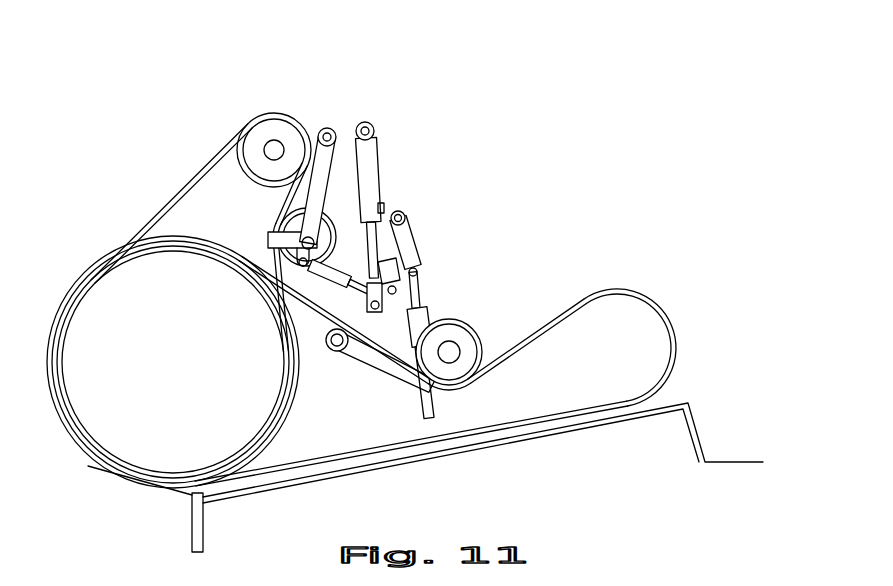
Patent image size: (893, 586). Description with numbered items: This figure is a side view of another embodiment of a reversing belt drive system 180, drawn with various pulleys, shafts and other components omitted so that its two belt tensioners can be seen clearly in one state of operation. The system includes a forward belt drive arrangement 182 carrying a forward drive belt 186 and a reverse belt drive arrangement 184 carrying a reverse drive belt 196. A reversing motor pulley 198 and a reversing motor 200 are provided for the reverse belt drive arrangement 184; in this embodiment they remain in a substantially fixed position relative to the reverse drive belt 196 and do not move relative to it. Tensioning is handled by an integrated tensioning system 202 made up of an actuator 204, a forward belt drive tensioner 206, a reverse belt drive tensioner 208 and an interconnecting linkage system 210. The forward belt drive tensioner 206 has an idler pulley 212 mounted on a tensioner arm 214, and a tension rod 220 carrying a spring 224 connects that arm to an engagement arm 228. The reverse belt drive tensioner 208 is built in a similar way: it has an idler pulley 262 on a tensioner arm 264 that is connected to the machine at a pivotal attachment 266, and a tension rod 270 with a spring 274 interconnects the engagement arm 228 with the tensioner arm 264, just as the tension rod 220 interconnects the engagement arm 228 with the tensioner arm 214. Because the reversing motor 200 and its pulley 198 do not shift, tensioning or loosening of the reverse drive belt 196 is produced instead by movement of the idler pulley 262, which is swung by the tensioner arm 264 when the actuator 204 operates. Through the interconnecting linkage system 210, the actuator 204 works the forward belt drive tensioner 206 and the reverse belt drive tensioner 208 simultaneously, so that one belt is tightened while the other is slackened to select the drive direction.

The reversing belt drive system 180 is at (539, 140).
The forward belt drive arrangement 182 is at (698, 335).
The reverse belt drive arrangement 184 is at (273, 87).
The forward drive belt 186 is at (584, 308).
The reverse drive belt 196 is at (85, 294).
The reversing motor pulley 198 is at (254, 184).
The reversing motor 200 is at (266, 142).
The integrated tensioning system 202 is at (392, 105).
The actuator 204 is at (378, 152).
The forward belt drive tensioner 206 is at (502, 243).
The reverse belt drive tensioner 208 is at (323, 100).
The interconnecting linkage system 210 is at (438, 210).
The idler pulley 212 is at (465, 335).
The tensioner arm 214 is at (383, 376).
The tension rod 220 is at (435, 407).
The spring 224 is at (430, 310).
The engagement arm 228 is at (407, 243).
The idler pulley 262 is at (290, 225).
The tensioner arm 264 is at (315, 197).
The pivotal attachment 266 is at (334, 132).
The tension rod 270 is at (362, 285).
The spring 274 is at (333, 274).